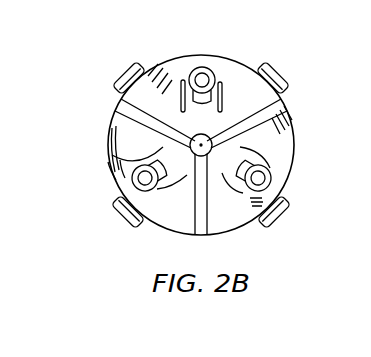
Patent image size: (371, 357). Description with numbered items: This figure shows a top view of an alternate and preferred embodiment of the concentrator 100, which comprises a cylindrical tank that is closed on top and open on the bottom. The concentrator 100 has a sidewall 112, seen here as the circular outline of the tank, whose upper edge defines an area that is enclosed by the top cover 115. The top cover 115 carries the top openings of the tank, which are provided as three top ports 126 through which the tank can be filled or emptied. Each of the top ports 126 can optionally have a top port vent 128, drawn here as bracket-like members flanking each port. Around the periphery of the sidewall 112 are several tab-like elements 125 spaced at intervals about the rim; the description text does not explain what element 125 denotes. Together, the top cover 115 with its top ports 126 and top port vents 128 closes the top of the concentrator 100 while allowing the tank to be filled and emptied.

The concentrator 100 is at (296, 120).
The sidewall 112 is at (183, 60).
The top cover 115 is at (228, 87).
The mounting ears 125 is at (125, 68).
The top port 126 is at (203, 67).
The top port vent 128 is at (247, 77).